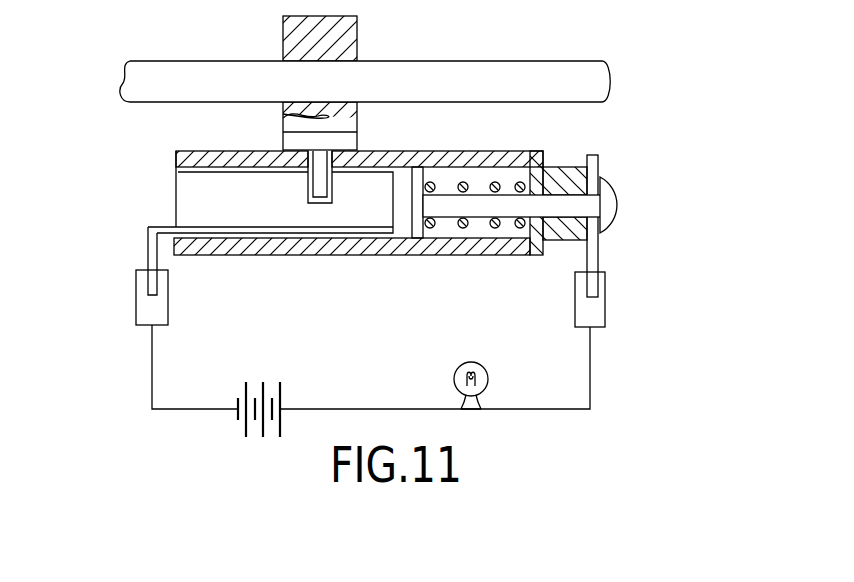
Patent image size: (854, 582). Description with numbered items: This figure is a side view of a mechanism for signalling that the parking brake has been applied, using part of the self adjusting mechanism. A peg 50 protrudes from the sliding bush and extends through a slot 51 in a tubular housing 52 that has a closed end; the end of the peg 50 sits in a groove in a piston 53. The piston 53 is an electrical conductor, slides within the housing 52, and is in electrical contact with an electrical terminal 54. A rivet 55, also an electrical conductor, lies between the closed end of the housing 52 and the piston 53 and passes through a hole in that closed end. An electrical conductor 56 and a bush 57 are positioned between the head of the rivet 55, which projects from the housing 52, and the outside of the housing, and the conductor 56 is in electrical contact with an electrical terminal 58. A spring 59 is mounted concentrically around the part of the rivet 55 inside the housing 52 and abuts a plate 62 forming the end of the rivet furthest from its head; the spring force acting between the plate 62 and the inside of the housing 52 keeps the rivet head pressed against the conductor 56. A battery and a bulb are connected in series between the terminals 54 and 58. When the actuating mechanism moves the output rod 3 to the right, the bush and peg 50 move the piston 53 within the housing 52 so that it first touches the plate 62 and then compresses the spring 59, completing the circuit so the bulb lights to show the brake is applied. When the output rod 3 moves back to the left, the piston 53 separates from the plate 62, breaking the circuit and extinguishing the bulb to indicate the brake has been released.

The output rod 3 is at (557, 70).
The peg 50 is at (332, 150).
The slot 51 is at (422, 157).
The tubular housing 52 is at (178, 158).
The piston 53 is at (185, 195).
The electrical terminal 54 is at (158, 303).
The rivet 55 is at (613, 208).
The electrical conductor 56 is at (598, 268).
The bush 57 is at (573, 170).
The electrical terminal 58 is at (578, 299).
The spring 59 is at (497, 188).
The plate 62 is at (418, 229).